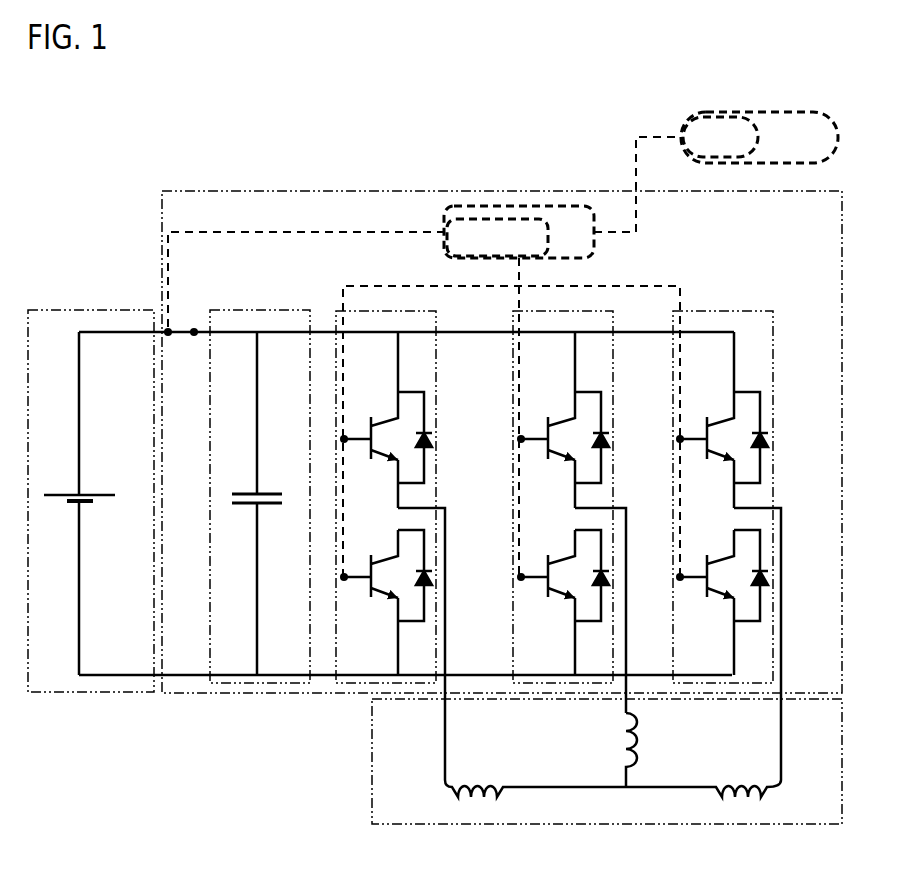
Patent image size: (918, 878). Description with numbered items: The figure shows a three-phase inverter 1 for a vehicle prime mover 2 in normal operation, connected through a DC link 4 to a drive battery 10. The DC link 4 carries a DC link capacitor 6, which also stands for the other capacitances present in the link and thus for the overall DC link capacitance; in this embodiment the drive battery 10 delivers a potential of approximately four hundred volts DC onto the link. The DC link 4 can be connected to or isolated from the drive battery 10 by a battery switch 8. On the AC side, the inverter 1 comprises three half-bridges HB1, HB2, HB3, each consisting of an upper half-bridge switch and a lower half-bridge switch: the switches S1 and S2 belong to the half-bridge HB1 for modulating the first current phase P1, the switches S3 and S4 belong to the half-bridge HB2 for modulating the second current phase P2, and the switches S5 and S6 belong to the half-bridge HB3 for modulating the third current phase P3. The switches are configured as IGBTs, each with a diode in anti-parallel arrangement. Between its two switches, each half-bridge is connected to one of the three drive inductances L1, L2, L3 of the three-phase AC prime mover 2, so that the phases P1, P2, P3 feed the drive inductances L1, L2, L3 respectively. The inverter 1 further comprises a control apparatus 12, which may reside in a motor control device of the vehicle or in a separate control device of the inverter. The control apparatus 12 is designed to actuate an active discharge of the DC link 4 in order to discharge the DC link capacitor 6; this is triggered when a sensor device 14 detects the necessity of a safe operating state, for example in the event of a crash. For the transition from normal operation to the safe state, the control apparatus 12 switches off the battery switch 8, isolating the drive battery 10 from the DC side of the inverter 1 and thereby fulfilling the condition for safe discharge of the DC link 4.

The three-phase inverter 1 is at (336, 189).
The vehicle prime mover 2 is at (370, 795).
The DC link 4 is at (265, 312).
The DC link capacitor 6 is at (241, 488).
The battery switch 8 is at (194, 310).
The drive battery 10 is at (101, 312).
The control apparatus 12 is at (580, 232).
The sensor device 14 is at (816, 148).
The first half-bridge HB1 is at (403, 312).
The second half-bridge HB2 is at (588, 312).
The third half-bridge HB3 is at (750, 312).
The upper half-bridge switch of first half-bridge S1 is at (382, 407).
The lower half-bridge switch of first half-bridge S2 is at (382, 625).
The upper half-bridge switch of second half-bridge S3 is at (561, 407).
The lower half-bridge switch of second half-bridge S4 is at (561, 625).
The upper half-bridge switch of third half-bridge S5 is at (719, 407).
The lower half-bridge switch of third half-bridge S6 is at (719, 625).
The first current phase P1 is at (443, 730).
The second current phase P2 is at (623, 700).
The third current phase P3 is at (779, 732).
The drive inductance of the first current phase L1 is at (489, 769).
The drive inductance of the second current phase L2 is at (607, 748).
The drive inductance of the third current phase L3 is at (756, 769).